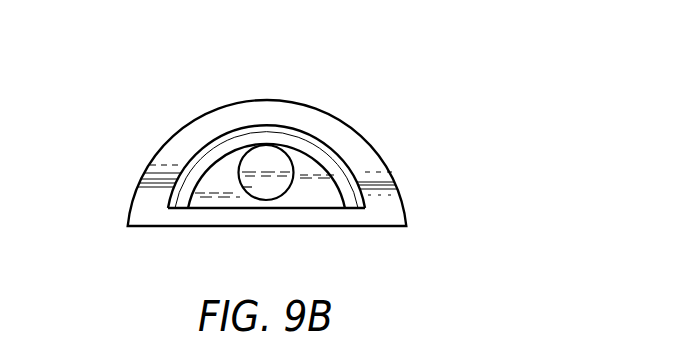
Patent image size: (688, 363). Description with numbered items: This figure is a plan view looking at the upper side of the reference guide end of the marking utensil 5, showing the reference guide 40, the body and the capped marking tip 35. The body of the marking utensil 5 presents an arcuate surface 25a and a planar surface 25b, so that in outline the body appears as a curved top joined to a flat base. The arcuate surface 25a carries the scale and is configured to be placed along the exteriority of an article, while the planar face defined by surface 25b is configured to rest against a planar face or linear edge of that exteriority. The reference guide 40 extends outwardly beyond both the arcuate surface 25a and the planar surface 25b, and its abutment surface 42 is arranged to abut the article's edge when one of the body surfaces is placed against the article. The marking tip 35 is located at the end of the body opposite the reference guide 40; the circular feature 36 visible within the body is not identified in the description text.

The marking utensil 5 is at (311, 140).
The arcuate surface 25a is at (288, 133).
The planar surface 25b is at (226, 210).
The marking tip 35 is at (262, 140).
The channel 36 is at (267, 183).
The reference guide 40 is at (415, 188).
The abutment surface 42 is at (311, 163).